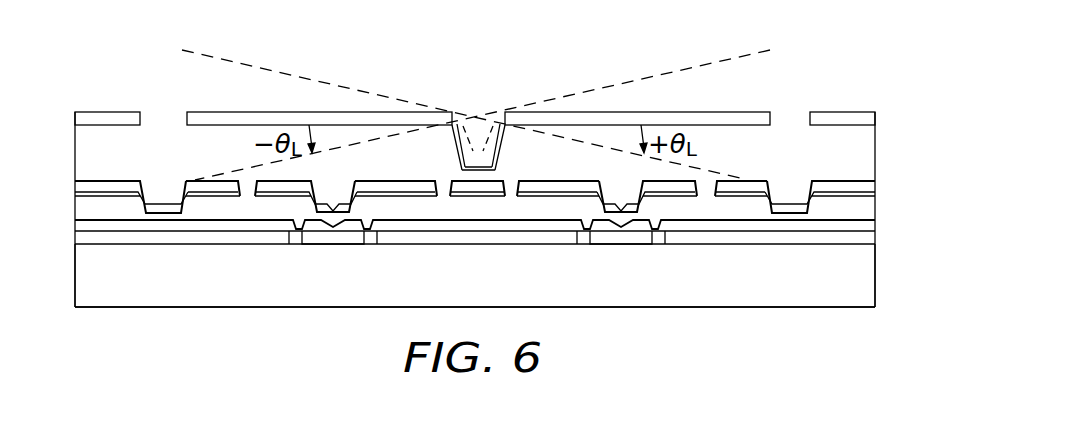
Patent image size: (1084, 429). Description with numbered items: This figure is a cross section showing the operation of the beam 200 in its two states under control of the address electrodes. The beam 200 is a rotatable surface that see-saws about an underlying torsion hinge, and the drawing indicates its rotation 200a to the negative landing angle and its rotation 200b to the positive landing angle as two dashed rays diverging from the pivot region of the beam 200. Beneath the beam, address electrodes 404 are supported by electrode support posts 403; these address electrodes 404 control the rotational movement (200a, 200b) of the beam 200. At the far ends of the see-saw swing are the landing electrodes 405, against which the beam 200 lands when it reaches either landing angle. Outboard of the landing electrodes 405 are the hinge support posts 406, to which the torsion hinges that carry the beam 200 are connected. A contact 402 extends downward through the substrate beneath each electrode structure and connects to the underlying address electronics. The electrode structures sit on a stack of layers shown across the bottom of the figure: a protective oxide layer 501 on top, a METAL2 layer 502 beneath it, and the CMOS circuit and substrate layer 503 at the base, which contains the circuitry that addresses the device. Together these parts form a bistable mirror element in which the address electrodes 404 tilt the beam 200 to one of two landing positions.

The beam 200 is at (736, 111).
The rotation to landing angle -θL 200a is at (612, 84).
The rotation to landing angle +θL 200b is at (335, 83).
The contact 402 is at (333, 232).
The electrode support post 403 is at (338, 204).
The address electrode 404 is at (408, 181).
The landing electrode 405 is at (210, 183).
The hinge support post 406 is at (162, 203).
The protective oxide layer 501 is at (875, 221).
The METAL2 layer 502 is at (875, 233).
The CMOS circuit and substrate layer 503 is at (875, 278).